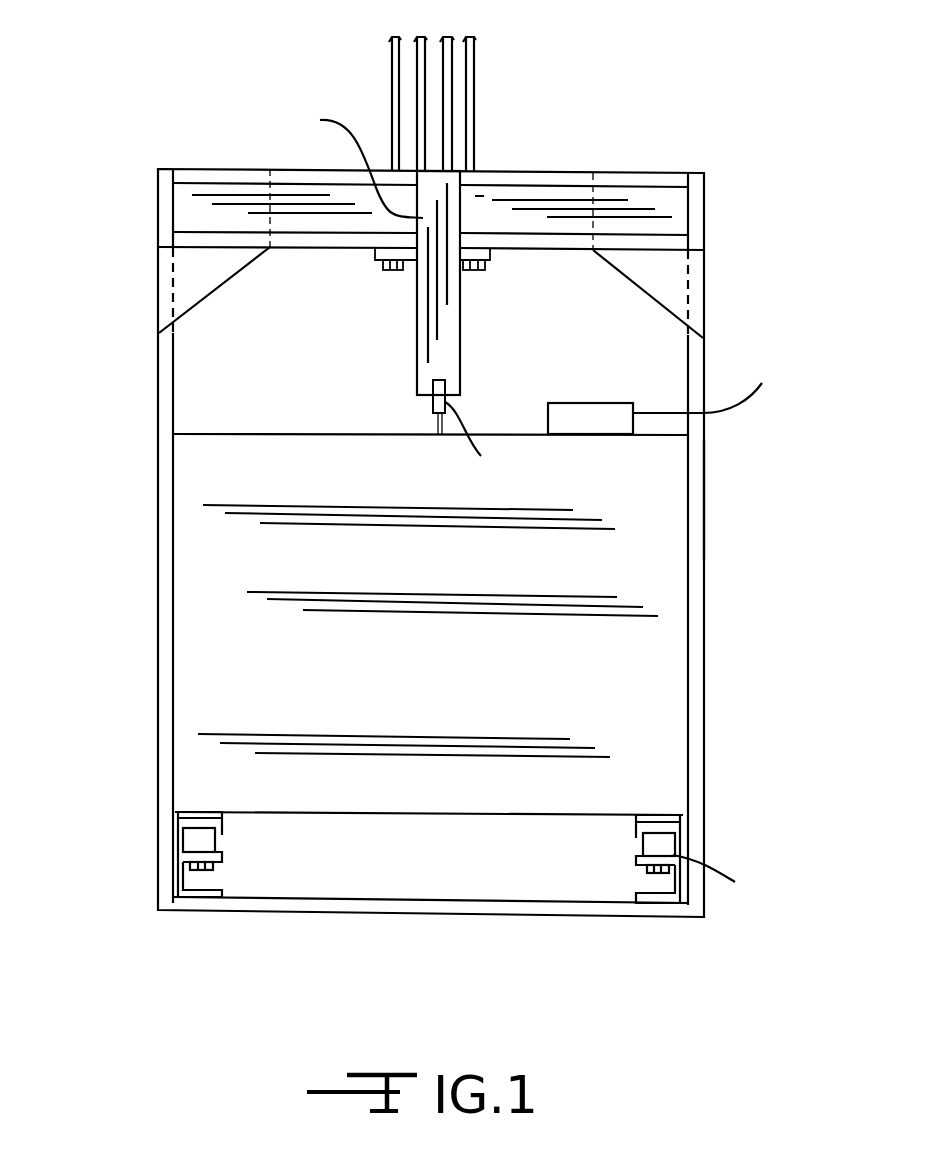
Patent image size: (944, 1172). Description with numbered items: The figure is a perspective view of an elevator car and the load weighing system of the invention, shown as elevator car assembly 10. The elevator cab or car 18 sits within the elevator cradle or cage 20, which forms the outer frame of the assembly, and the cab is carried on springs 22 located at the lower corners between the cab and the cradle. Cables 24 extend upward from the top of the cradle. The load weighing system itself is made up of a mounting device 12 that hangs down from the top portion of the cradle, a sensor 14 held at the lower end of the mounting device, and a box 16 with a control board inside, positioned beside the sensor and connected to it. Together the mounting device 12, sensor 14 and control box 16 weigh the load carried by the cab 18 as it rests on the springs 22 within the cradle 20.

The elevator car assembly 10 is at (104, 311).
The mounting device 12 is at (417, 313).
The sensor 14 is at (433, 405).
The box 16 is at (590, 403).
The elevator cab 18 is at (445, 679).
The elevator cradle 20 is at (705, 507).
The springs 22 is at (190, 840).
The cables 24 is at (475, 74).